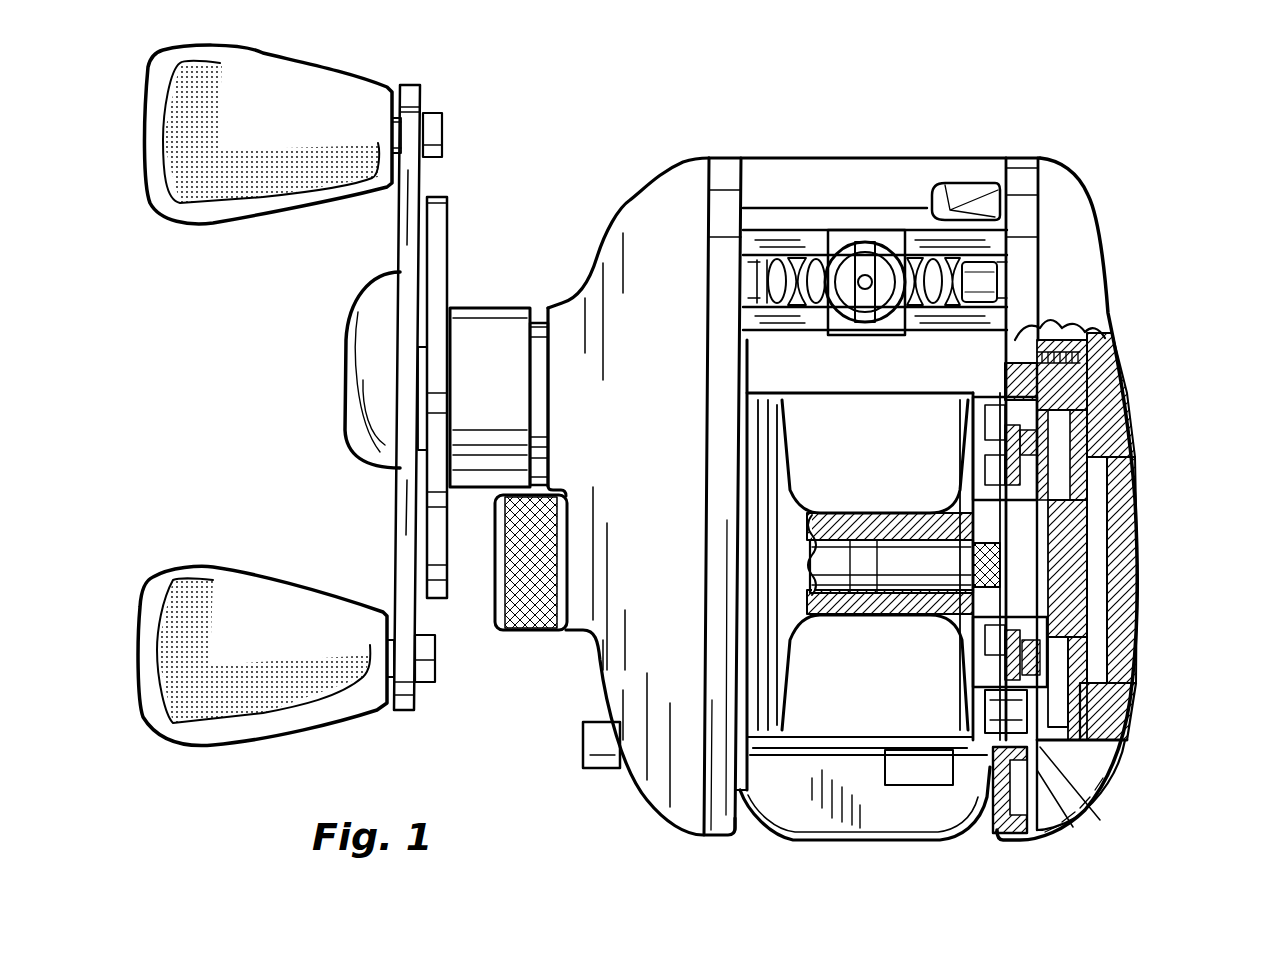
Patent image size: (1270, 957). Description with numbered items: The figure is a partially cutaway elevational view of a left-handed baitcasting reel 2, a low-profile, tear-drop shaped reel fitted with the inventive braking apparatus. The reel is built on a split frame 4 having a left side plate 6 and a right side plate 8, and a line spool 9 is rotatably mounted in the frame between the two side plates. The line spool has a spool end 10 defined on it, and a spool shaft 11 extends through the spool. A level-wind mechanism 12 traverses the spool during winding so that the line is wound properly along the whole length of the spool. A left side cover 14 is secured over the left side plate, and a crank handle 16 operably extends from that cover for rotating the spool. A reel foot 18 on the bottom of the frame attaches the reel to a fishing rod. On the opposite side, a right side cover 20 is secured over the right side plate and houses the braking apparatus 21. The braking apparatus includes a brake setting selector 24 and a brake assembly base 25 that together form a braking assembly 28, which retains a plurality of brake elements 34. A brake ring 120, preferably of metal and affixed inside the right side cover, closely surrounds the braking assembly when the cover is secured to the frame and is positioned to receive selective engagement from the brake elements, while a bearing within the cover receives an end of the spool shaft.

The baitcasting reel 2 is at (1098, 174).
The split frame 4 is at (728, 158).
The left side plate 6 is at (712, 832).
The right side plate 8 is at (997, 827).
The line spool 9 is at (848, 518).
The spool end 10 is at (997, 392).
The spool shaft 11 is at (913, 580).
The level-wind mechanism 12 is at (872, 232).
The left side cover 14 is at (640, 222).
The crank handle 16 is at (405, 240).
The reel foot 18 is at (813, 812).
The right side cover 20 is at (1105, 275).
The braking apparatus 21 is at (1092, 566).
The brake setting selector 24 is at (1085, 745).
The brake assembly base 25 is at (998, 712).
The braking assembly 28 is at (1062, 820).
The brake elements 34 is at (1010, 455).
The brake ring 120 is at (1083, 735).